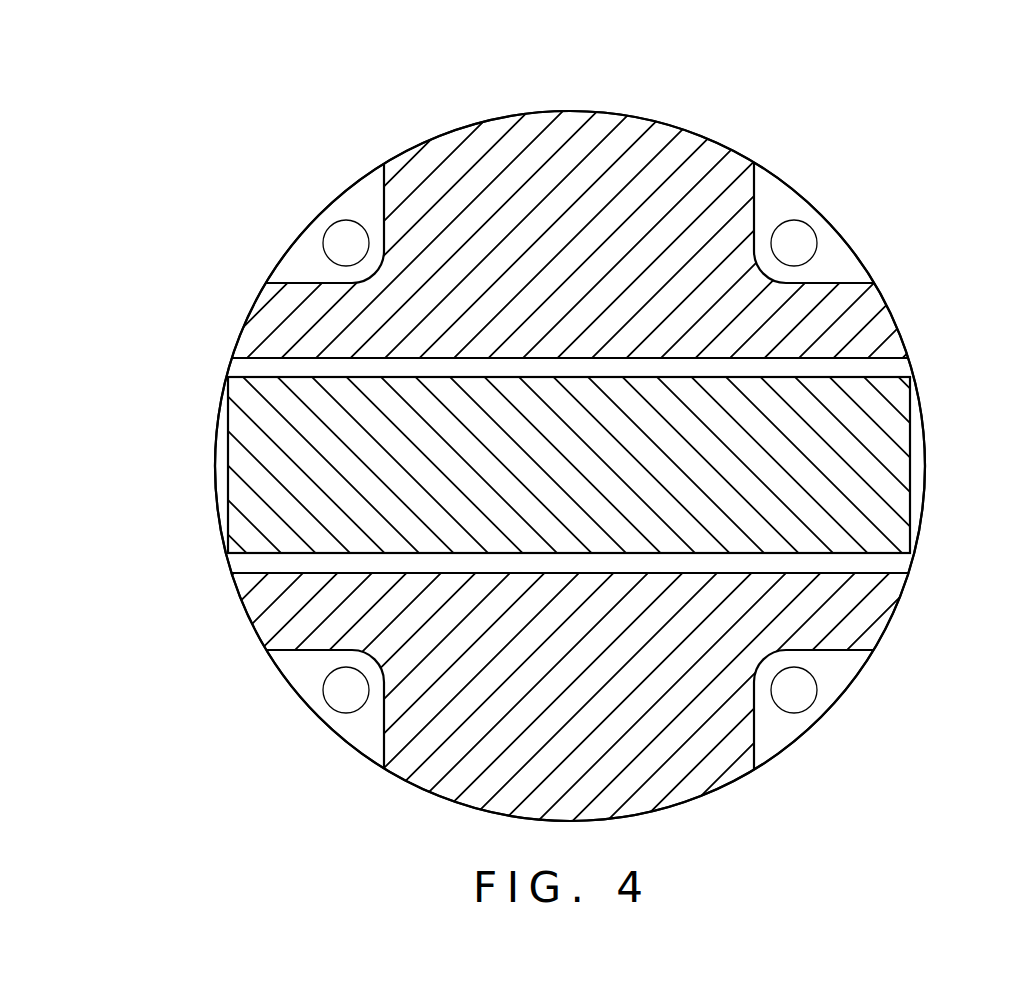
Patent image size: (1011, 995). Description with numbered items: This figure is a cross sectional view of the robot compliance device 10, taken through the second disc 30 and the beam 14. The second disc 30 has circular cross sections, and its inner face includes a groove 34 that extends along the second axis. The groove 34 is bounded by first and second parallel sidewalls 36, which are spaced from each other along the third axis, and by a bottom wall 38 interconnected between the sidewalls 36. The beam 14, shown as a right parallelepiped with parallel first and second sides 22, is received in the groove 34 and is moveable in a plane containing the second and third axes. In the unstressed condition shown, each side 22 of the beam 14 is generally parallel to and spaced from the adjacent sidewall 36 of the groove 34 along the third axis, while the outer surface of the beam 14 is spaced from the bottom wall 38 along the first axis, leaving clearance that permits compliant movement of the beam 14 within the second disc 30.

The robot compliance device 10 is at (327, 132).
The beam 14 is at (890, 473).
The first and second sides 22 is at (270, 377).
The second disc 30 is at (555, 132).
The groove 34 is at (216, 462).
The first and second sidewalls 36 is at (897, 352).
The bottom wall 38 is at (858, 562).